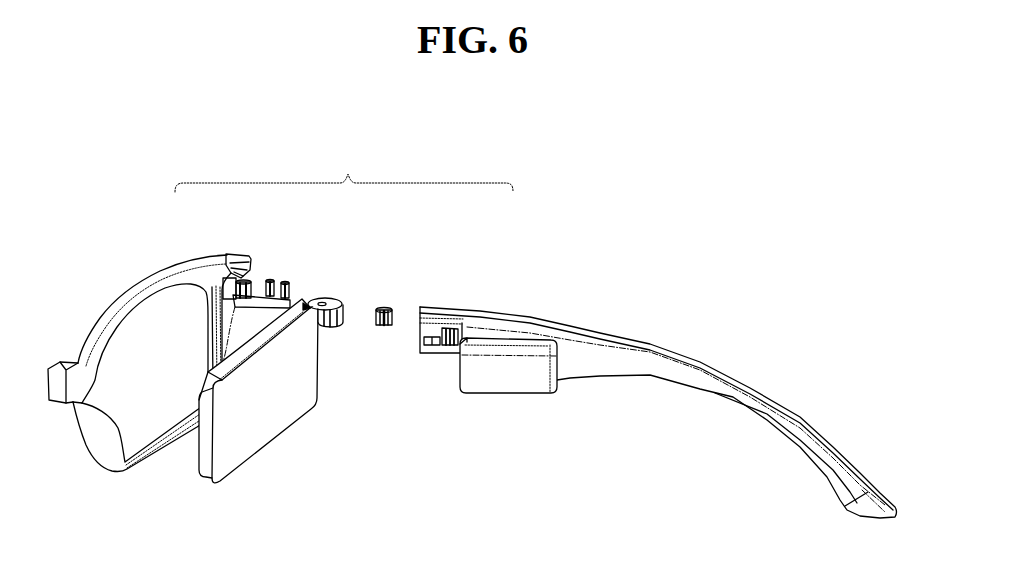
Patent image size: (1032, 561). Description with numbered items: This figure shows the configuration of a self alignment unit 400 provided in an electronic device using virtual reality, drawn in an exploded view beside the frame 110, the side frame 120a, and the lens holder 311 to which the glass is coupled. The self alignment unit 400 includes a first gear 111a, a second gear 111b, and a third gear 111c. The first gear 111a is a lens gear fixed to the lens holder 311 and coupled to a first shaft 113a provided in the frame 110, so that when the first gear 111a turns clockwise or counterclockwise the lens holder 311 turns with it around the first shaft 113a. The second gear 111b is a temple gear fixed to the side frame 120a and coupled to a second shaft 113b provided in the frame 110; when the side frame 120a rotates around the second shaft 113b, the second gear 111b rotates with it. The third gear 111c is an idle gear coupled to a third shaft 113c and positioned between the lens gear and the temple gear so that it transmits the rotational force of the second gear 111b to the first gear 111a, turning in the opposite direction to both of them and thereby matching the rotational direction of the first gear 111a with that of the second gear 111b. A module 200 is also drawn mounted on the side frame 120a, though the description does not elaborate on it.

The frame 110 is at (132, 304).
The self alignment unit 400 is at (344, 170).
The first shaft 113a is at (232, 262).
The second shaft 113b is at (288, 278).
The third shaft 113c is at (270, 276).
The first gear 111a is at (333, 294).
The second gear 111b is at (456, 327).
The third gear 111c is at (389, 305).
The lens holder 311 is at (274, 434).
The electronic module 200 is at (513, 382).
The side frame 120a is at (723, 367).